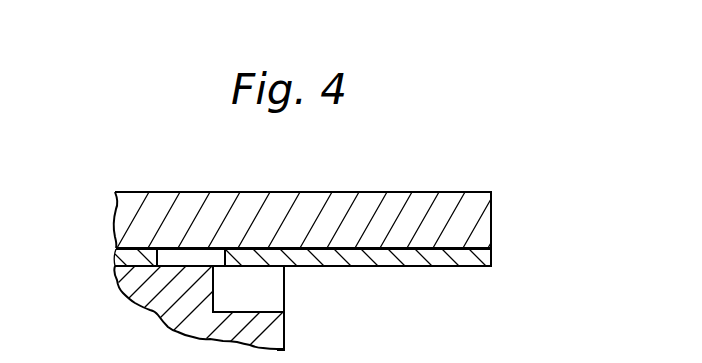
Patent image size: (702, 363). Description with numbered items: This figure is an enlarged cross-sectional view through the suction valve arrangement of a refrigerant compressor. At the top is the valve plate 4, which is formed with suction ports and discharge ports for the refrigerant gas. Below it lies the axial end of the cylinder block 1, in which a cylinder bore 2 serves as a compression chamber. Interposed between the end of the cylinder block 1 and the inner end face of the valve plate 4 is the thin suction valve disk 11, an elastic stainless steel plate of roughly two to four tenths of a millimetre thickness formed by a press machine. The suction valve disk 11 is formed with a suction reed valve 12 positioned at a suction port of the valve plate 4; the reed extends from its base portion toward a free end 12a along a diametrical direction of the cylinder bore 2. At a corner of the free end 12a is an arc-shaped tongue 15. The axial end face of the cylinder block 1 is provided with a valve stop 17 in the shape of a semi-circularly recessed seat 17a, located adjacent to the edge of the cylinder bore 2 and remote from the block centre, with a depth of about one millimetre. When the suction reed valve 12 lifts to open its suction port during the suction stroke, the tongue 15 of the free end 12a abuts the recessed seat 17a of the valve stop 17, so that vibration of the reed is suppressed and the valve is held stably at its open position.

The cylinder block 1 is at (162, 306).
The cylinder bore 2 is at (284, 343).
The valve plate 4 is at (192, 202).
The suction valve disk 11 is at (127, 252).
The suction reed valve 12 is at (372, 266).
The free end 12a is at (211, 247).
The tongue 15 is at (250, 264).
The valve stop 17 is at (284, 281).
The recessed seat 17a is at (267, 310).